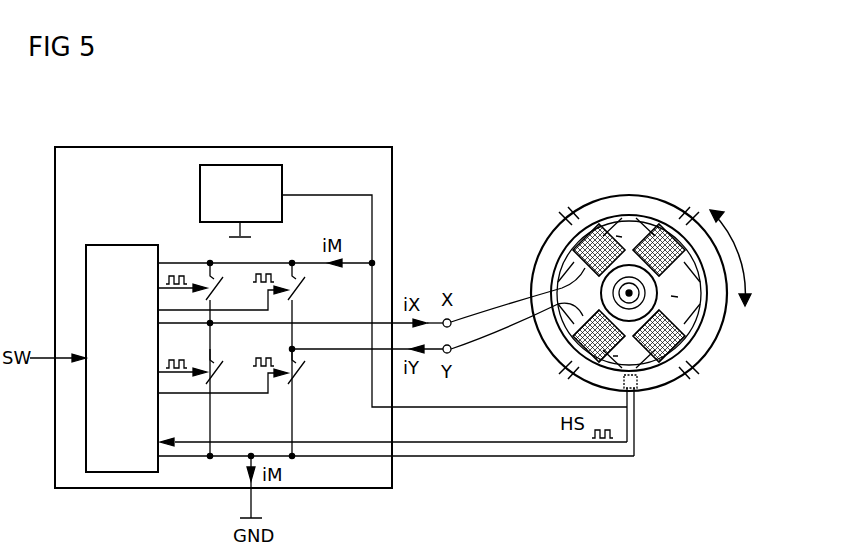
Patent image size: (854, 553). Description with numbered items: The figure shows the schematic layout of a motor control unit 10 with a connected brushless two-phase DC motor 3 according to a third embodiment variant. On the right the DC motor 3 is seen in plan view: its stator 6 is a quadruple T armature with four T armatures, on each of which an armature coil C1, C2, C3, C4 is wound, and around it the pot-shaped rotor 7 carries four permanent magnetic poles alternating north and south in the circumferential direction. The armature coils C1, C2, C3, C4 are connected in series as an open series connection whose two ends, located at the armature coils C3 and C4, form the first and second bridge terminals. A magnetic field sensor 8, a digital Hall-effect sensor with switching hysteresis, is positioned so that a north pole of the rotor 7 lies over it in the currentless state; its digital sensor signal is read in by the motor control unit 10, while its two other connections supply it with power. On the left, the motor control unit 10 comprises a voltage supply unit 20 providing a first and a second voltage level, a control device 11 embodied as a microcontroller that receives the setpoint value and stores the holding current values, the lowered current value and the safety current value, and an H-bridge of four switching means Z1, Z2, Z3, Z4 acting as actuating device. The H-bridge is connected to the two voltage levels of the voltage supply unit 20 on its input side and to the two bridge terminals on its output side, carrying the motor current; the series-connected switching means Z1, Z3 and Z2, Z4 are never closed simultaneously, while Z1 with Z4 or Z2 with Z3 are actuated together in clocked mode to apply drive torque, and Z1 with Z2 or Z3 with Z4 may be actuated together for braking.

The DC motor 3 is at (625, 286).
The motor control unit 10 is at (332, 146).
The control device 11 is at (118, 245).
The voltage supply unit 20 is at (237, 165).
The pot-shaped rotor 7 is at (702, 354).
The magnetic field sensor 8 is at (639, 387).
The stator 6 is at (593, 214).
The switching means Z1 is at (218, 292).
The switching means Z2 is at (300, 292).
The switching means Z3 is at (218, 376).
The switching means Z4 is at (300, 376).
The armature coil C1 is at (668, 370).
The armature coil C2 is at (673, 212).
The armature coil C3 is at (580, 270).
The armature coil C4 is at (572, 331).